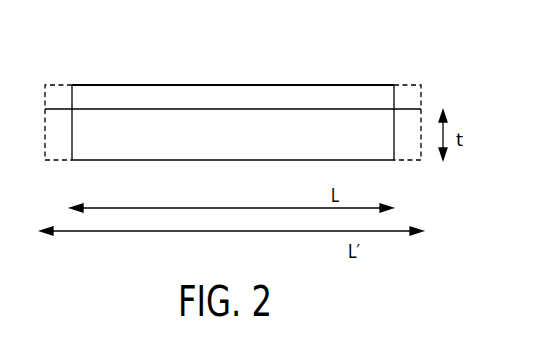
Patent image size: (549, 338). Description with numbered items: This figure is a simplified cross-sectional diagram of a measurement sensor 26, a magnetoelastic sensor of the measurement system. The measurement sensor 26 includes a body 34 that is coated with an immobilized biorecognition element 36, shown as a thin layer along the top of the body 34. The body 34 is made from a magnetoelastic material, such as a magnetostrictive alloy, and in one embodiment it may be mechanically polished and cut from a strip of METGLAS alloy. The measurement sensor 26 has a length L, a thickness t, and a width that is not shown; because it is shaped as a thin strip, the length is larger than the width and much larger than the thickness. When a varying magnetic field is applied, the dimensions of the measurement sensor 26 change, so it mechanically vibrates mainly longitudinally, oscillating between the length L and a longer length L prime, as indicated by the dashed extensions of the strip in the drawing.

The measurement sensor 26 is at (414, 57).
The body 34 is at (88, 128).
The immobilized biorecognition element 36 is at (170, 97).